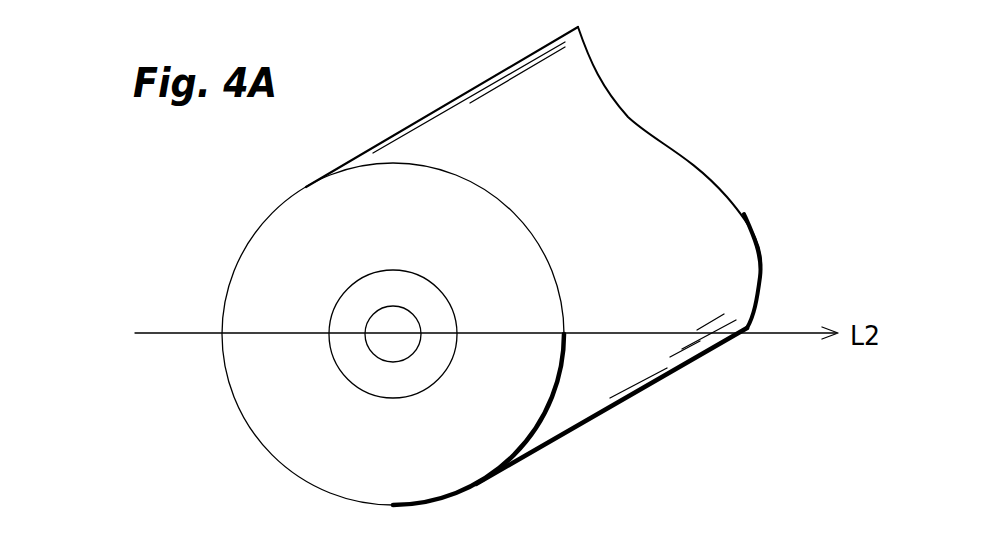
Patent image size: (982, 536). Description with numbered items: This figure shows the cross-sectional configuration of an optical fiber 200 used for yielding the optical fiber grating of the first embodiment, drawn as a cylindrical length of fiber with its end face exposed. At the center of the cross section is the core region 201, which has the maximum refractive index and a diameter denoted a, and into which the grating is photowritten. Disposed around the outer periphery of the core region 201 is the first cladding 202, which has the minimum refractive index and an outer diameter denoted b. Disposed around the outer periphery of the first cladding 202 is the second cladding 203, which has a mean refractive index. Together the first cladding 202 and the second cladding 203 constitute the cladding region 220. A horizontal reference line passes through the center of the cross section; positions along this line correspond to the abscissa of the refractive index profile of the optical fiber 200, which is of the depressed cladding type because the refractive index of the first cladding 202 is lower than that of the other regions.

The optical fiber 200 is at (678, 182).
The core region 201 is at (407, 347).
The first cladding 202 is at (341, 318).
The second cladding 203 is at (260, 245).
The cladding region 220 is at (296, 334).